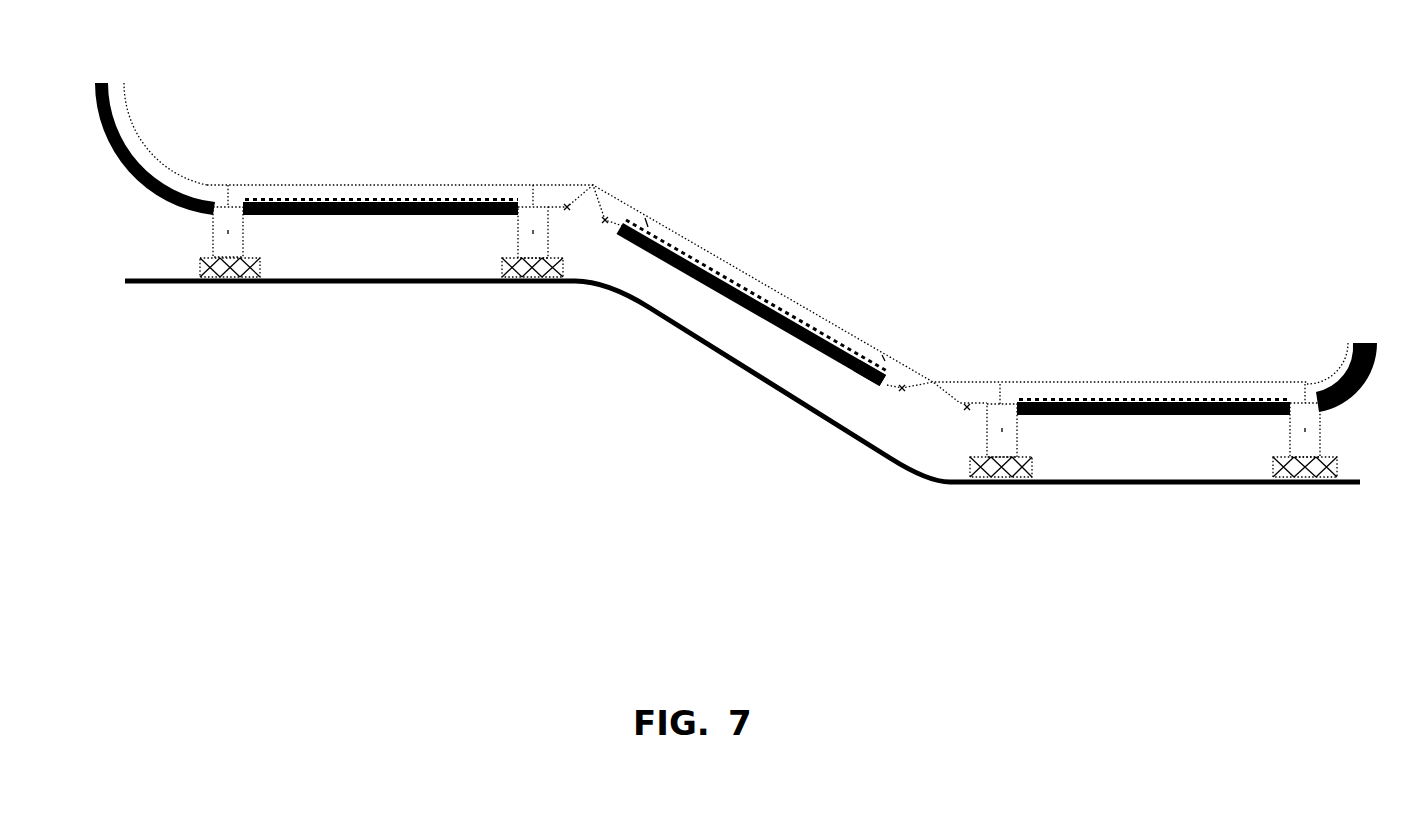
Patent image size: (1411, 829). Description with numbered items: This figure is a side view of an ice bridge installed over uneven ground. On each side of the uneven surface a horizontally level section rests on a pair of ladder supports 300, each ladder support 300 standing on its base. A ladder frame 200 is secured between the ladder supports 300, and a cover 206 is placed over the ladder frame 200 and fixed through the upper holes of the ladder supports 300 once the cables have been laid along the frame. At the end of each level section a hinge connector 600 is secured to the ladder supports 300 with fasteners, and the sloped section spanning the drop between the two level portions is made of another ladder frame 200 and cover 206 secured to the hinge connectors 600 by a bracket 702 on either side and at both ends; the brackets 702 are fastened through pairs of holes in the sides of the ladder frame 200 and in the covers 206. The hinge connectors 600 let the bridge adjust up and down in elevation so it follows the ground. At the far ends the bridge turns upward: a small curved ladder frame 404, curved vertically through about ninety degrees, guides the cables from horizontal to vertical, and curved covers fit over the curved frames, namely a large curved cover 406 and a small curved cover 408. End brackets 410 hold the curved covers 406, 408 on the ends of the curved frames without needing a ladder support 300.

The ladder frame 200 is at (352, 225).
The cover 206 is at (415, 183).
The ladder support 300 is at (205, 243).
The small curved ladder frame 404 is at (125, 160).
The large curved cover 406 is at (140, 123).
The small curved cover 408 is at (1363, 385).
The end bracket 410 is at (1332, 370).
The hinge connector 600 is at (588, 178).
The bracket 702 is at (873, 381).